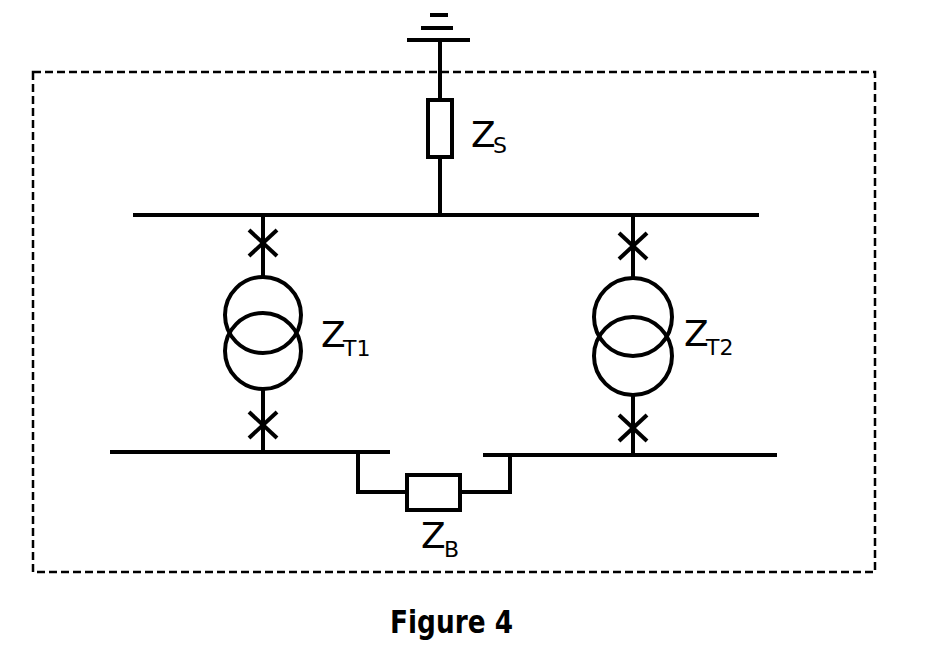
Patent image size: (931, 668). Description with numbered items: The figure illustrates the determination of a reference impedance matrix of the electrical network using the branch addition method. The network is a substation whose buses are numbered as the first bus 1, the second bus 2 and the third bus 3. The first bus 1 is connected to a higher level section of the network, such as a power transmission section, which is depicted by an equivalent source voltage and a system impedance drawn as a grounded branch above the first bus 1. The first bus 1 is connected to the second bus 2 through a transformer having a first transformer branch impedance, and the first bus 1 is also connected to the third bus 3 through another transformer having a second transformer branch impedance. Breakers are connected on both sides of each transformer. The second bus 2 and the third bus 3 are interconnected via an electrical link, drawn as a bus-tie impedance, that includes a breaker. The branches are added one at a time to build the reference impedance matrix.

The first bus 1 is at (446, 192).
The second bus 2 is at (250, 426).
The third bus 3 is at (630, 432).